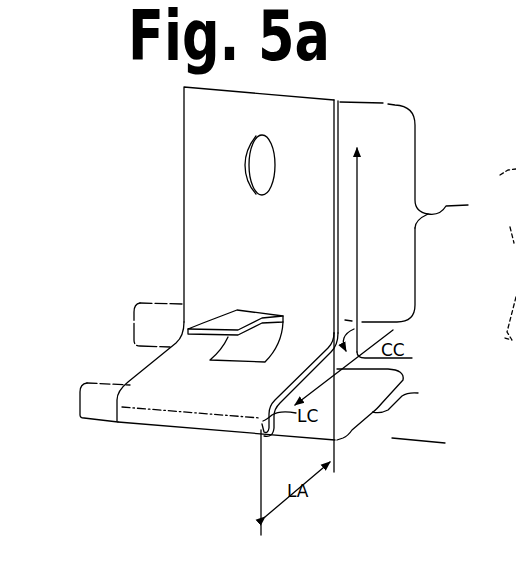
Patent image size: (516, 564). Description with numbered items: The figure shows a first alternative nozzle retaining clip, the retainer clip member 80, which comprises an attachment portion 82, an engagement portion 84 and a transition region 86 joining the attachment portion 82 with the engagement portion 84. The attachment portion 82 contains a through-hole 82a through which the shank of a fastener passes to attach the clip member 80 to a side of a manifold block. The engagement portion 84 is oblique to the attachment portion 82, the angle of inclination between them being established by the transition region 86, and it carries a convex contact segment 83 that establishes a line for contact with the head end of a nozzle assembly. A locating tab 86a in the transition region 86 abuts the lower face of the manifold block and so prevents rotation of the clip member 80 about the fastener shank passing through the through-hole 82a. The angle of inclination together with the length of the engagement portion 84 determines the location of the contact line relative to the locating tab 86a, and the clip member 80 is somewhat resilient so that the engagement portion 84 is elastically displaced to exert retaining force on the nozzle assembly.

The retainer clip member 80 is at (207, 197).
The attachment portion 82 is at (428, 221).
The through-hole 82a is at (263, 176).
The convex contact segment 83 is at (80, 400).
The engagement portion 84 is at (391, 406).
The transition region 86 is at (134, 323).
The locating tab 86a is at (235, 323).